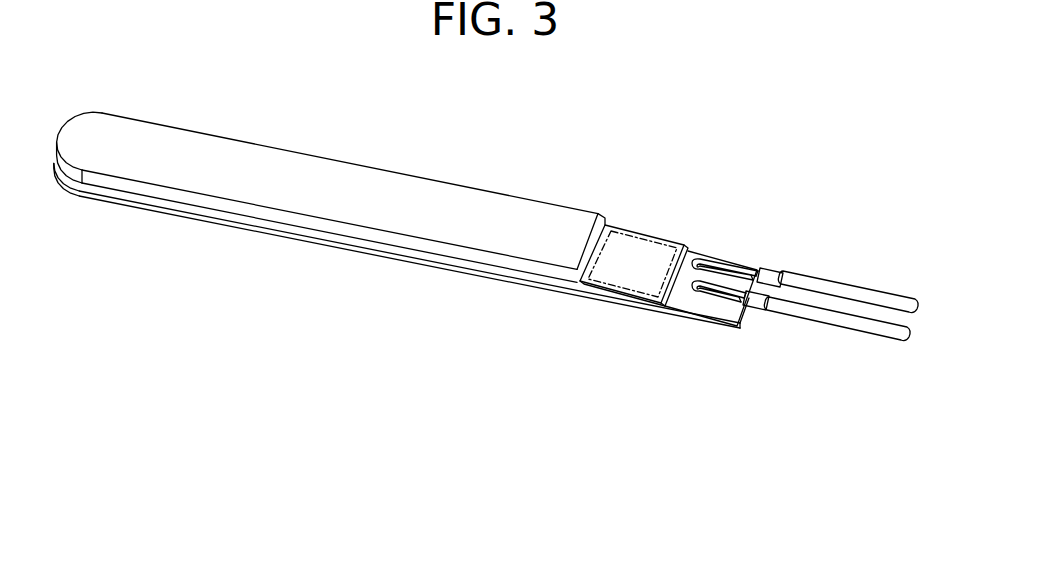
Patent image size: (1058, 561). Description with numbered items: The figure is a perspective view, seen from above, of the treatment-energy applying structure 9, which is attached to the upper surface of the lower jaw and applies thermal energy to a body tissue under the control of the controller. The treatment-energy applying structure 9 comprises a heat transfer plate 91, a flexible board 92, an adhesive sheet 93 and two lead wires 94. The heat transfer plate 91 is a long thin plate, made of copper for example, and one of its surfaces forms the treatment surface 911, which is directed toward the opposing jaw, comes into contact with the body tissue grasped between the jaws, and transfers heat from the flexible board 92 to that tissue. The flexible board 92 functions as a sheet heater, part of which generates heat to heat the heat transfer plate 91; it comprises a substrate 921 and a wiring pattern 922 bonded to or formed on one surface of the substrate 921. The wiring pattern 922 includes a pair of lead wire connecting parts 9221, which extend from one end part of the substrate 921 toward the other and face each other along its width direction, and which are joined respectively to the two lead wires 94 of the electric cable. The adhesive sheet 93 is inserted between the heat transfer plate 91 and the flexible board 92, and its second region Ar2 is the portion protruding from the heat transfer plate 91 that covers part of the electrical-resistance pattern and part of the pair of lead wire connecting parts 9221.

The treatment-energy applying structure 9 is at (586, 126).
The heat transfer plate 91 is at (531, 249).
The treatment surface 911 is at (341, 177).
The flexible board 92 is at (603, 370).
The substrate 921 is at (717, 325).
The wiring pattern 922 is at (668, 282).
The lead wire connecting parts 9221 is at (688, 284).
The adhesive sheet 93 is at (597, 272).
The lead wires 94 is at (870, 304).
The second region Ar2 is at (621, 227).